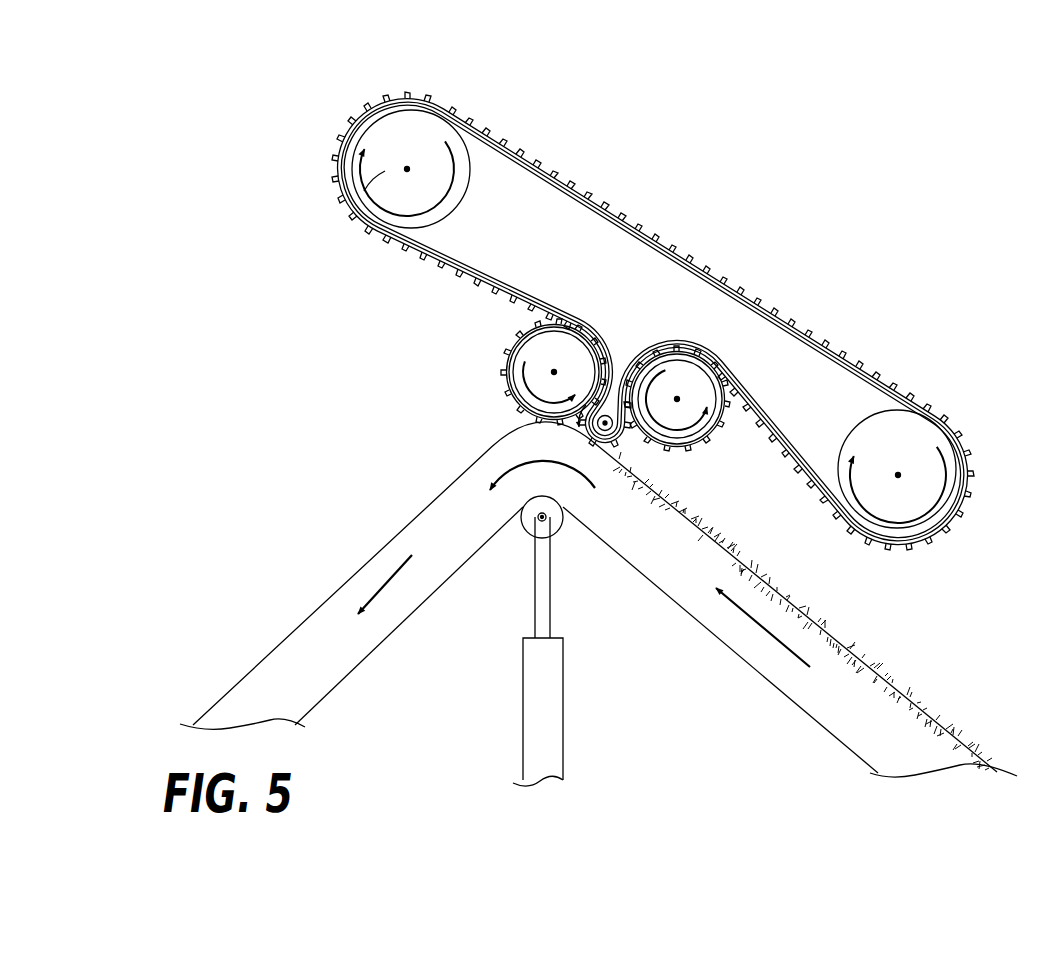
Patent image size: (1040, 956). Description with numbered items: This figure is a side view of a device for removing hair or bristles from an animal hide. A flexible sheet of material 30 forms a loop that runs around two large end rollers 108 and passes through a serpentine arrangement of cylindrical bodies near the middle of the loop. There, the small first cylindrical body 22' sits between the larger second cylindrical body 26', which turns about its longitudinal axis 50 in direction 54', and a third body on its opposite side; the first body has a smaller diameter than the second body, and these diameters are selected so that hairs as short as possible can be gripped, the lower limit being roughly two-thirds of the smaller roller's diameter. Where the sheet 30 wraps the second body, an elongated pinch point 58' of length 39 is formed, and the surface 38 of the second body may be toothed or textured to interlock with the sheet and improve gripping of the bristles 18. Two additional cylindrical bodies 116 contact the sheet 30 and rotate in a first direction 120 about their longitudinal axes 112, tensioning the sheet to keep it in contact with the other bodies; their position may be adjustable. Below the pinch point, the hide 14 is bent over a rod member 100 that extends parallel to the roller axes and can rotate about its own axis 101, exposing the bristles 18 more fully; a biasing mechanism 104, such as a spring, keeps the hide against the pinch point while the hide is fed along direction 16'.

The flexible sheet of material 30 is at (738, 291).
The pulley 108 is at (397, 120).
The longitudinal axes 112 is at (353, 210).
The additional cylindrical bodies 116 is at (467, 126).
The first direction 120 is at (393, 223).
The longitudinal axis 50 is at (529, 343).
The length 39 is at (587, 362).
The surface 38 is at (518, 341).
The second cylindrical body 26' is at (524, 372).
The direction 54' is at (512, 396).
The first cylindrical body 22' is at (632, 346).
The elongated pinch point 58' is at (549, 434).
The hair or bristles 18 is at (690, 515).
The direction 16' is at (386, 576).
The hide 14 is at (788, 692).
The rod member 100 is at (523, 540).
The longitudinal axis 101 is at (550, 535).
The biasing mechanism 104 is at (533, 708).